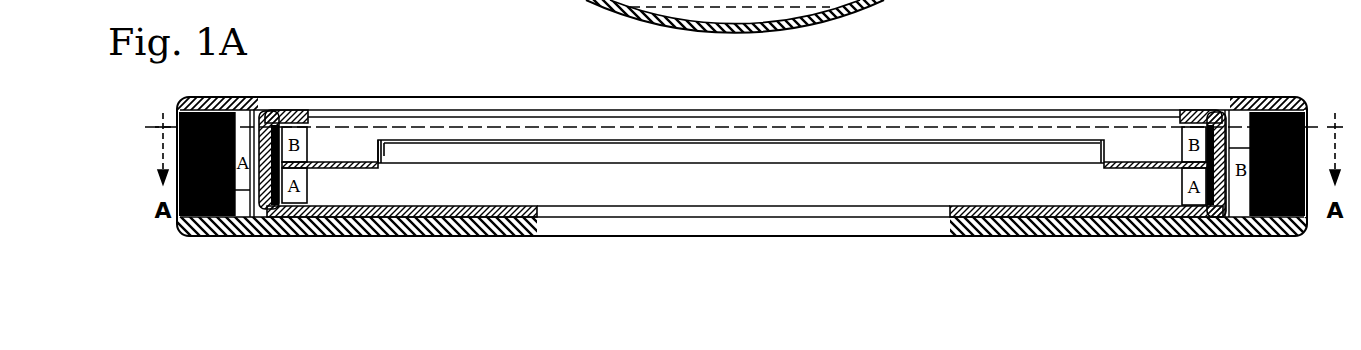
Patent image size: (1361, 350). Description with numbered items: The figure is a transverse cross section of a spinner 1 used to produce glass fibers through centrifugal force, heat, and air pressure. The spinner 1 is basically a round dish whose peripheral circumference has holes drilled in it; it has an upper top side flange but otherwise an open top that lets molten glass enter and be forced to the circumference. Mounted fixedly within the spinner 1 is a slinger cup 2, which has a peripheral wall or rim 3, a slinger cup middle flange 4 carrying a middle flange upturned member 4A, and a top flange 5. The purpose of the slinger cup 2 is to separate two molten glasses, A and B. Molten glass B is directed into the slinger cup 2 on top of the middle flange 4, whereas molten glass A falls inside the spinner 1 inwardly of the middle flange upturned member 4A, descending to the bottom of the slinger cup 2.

The spinner 1 is at (289, 228).
The slinger cup 2 is at (467, 233).
The peripheral wall or rim 3 is at (268, 114).
The slinger cup middle flange 4 is at (345, 168).
The middle flange upturned member 4A is at (390, 148).
The top flange 5 is at (288, 110).